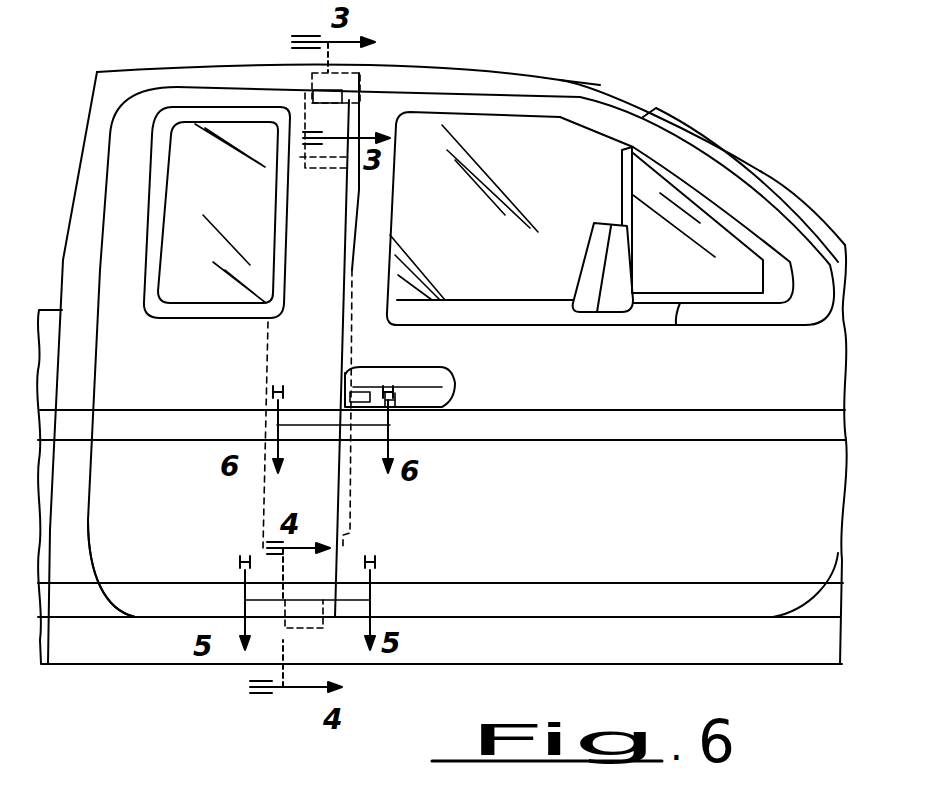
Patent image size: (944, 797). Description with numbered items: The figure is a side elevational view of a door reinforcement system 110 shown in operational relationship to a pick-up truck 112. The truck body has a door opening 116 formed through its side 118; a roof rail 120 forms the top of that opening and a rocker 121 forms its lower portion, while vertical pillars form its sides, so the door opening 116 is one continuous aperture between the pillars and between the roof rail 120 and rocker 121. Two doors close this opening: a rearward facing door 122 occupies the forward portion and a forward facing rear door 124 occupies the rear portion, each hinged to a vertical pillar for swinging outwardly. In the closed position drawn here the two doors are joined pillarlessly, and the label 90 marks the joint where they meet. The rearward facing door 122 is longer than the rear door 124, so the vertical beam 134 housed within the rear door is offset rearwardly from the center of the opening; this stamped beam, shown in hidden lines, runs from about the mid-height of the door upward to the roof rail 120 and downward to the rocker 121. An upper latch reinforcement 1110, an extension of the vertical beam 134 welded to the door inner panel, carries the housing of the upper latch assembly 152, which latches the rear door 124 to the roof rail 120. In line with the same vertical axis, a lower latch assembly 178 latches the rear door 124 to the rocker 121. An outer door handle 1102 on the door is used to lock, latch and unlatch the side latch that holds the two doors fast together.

The door reinforcement system 110 is at (70, 136).
The pick-up truck 112 is at (768, 178).
The door opening 116 is at (563, 97).
The side 118 is at (45, 490).
The roof rail 120 is at (508, 72).
The rocker 121 is at (508, 618).
The rearward facing door 122 is at (815, 508).
The forward facing rear door 124 is at (145, 562).
The vertical beam 134 is at (280, 502).
The upper latch assembly 152 is at (358, 74).
The lower latch assembly 178 is at (277, 634).
The B-pillar seam 90 is at (320, 461).
The outer door handle 1102 is at (369, 384).
The upper latch reinforcement 1110 is at (330, 145).